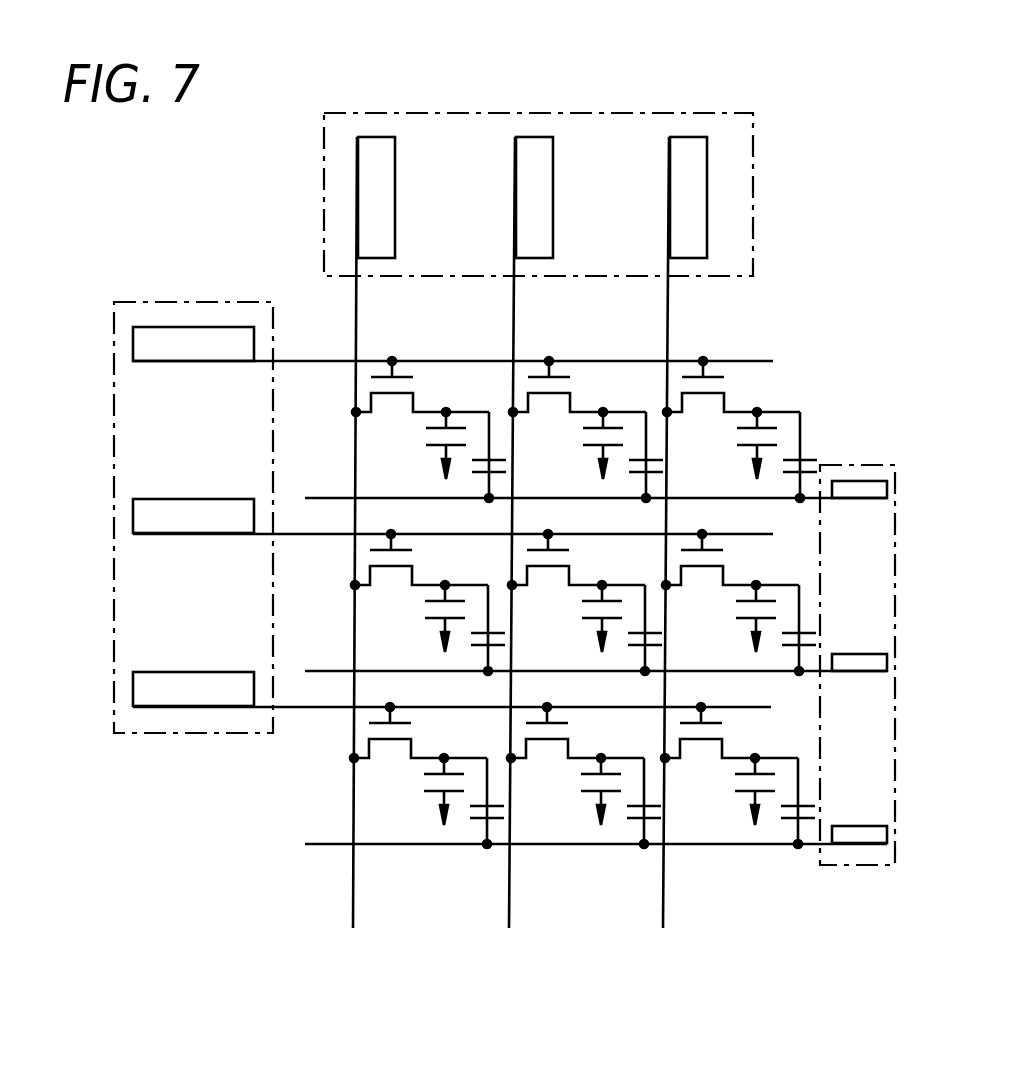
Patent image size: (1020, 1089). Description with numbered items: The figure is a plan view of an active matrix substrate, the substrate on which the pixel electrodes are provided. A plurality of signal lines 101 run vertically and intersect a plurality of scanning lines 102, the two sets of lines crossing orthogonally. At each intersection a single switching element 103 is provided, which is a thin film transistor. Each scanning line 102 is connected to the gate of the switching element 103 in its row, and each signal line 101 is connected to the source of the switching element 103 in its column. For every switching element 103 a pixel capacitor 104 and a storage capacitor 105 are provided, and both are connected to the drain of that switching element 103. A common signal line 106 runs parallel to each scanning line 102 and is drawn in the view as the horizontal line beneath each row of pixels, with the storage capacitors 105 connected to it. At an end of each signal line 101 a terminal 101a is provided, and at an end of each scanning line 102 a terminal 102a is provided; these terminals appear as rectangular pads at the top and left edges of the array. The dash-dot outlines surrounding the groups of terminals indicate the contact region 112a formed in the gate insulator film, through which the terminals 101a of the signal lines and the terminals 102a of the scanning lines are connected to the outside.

The signal line 101 is at (358, 300).
The terminal of signal line 101a is at (378, 137).
The scanning line 102 is at (318, 361).
The terminal of scanning line 102a is at (133, 345).
The switching element 103 is at (413, 377).
The pixel capacitor 104 is at (430, 424).
The storage capacitor 105 is at (482, 473).
The common signal line 106 is at (340, 497).
The contact region 112a is at (753, 203).